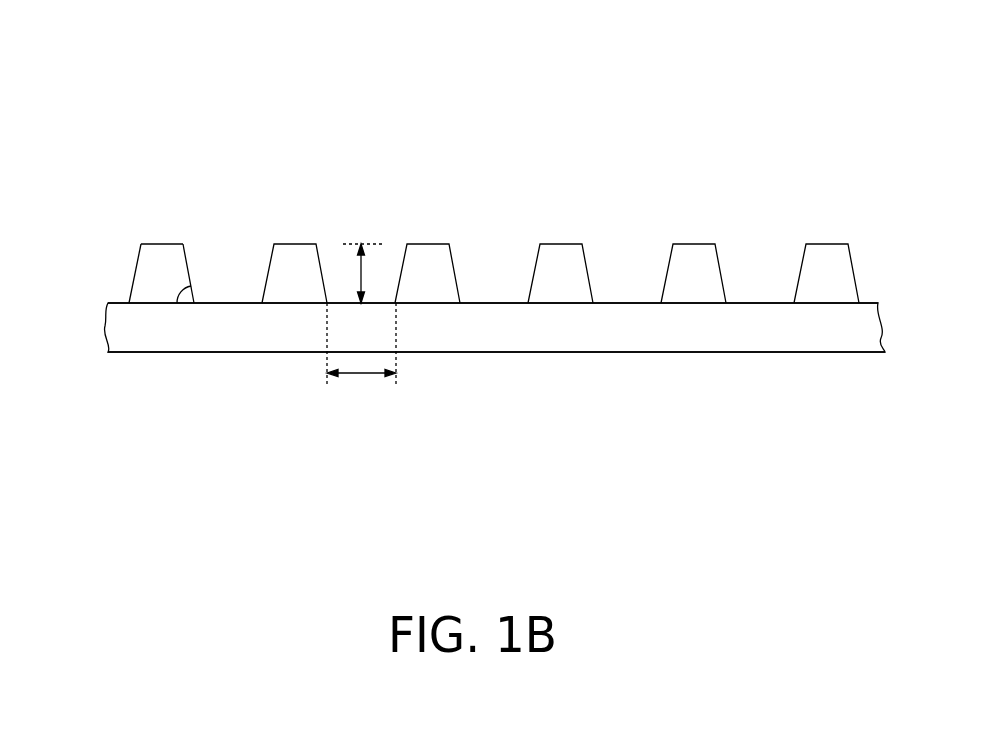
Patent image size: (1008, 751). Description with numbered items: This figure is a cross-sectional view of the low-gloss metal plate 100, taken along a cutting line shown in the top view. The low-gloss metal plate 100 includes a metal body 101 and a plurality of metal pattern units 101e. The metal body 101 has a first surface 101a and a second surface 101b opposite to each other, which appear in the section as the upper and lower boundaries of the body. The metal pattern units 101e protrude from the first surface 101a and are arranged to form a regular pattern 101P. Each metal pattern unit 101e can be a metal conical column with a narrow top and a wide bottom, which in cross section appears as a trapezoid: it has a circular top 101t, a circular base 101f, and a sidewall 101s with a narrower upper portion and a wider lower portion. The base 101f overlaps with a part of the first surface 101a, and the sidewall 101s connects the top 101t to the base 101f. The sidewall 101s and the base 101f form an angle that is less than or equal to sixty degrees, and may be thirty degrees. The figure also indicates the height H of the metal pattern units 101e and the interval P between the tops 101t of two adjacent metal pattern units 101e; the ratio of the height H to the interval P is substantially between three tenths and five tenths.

The low-gloss metal plate 100 is at (83, 31).
The metal body 101 is at (97, 243).
The regular pattern 101P is at (480, 346).
The first surface 101a is at (226, 299).
The second surface 101b is at (232, 356).
The metal pattern unit 101e is at (210, 369).
The top 101t is at (170, 240).
The sidewall 101s is at (188, 259).
The base 101f is at (142, 299).
The height H is at (364, 273).
The interval P is at (361, 357).